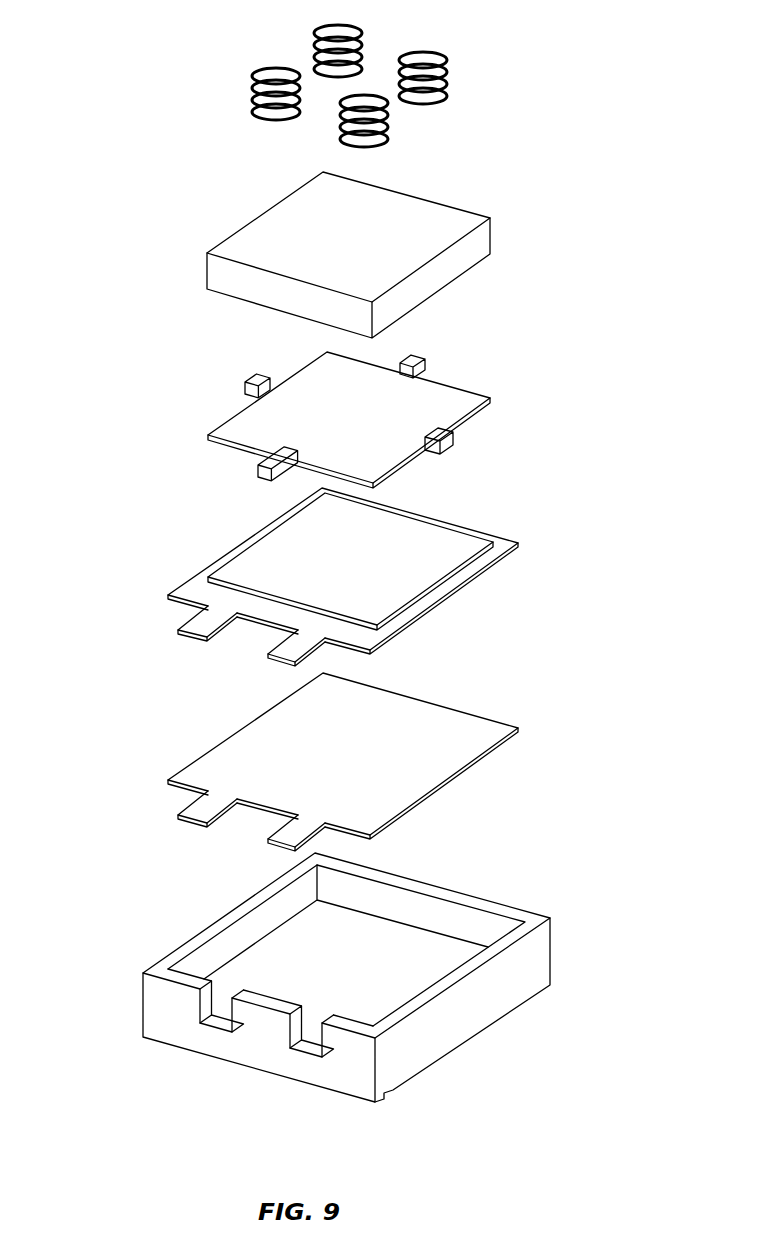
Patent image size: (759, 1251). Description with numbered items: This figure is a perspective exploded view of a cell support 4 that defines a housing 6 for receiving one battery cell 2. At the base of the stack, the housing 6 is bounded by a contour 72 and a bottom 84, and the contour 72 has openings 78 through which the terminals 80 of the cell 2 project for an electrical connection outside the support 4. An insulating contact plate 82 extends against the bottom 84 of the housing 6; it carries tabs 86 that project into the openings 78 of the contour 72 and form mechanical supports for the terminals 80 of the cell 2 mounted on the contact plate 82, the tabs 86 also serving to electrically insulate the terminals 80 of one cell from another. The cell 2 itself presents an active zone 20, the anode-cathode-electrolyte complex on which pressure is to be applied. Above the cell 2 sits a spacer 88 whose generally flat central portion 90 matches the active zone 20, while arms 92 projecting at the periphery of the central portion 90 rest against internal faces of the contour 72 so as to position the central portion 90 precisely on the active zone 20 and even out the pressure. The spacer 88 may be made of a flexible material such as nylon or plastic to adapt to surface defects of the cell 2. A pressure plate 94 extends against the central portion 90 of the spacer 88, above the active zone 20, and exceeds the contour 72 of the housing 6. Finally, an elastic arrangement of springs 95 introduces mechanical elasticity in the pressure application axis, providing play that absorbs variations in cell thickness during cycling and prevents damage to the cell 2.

The battery cell 2 is at (361, 592).
The support 4 is at (342, 557).
The housing 6 is at (434, 908).
The active zone 20 is at (440, 547).
The contour 72 is at (354, 975).
The openings 78 is at (298, 1054).
The terminals 80 is at (285, 652).
The insulating contact plate 82 is at (333, 771).
The bottom 84 is at (255, 972).
The tabs 86 is at (275, 842).
The spacer 88 is at (364, 402).
The central portion 90 is at (457, 397).
The arms 92 is at (420, 354).
The pressure plate 94 is at (440, 212).
The springs 95 is at (362, 34).